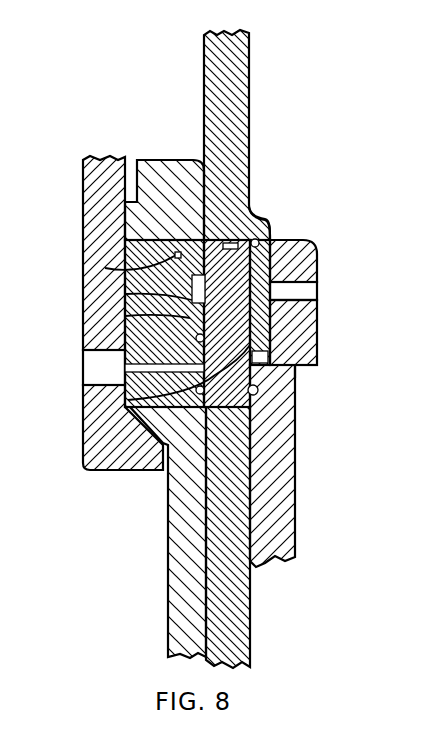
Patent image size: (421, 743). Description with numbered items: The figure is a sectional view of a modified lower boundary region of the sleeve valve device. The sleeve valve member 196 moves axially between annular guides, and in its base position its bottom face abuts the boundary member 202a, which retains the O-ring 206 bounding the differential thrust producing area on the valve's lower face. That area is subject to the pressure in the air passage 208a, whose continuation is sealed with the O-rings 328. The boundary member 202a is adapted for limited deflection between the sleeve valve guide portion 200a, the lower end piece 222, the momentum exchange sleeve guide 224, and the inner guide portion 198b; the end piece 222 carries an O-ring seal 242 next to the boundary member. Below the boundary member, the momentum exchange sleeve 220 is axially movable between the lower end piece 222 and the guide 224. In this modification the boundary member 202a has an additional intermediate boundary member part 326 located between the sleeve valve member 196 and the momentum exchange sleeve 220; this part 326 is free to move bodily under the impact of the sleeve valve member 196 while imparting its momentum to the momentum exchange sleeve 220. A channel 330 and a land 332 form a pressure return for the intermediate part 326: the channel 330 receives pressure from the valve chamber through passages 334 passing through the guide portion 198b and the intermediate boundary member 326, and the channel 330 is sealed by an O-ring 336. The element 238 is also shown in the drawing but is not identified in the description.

The sleeve valve member 196 is at (228, 80).
The sleeve valve guide portion 200a is at (172, 176).
The cover plate 238 is at (100, 189).
The O-ring 206 is at (272, 222).
The air passage 208a is at (313, 252).
The passages 334 is at (303, 290).
The guide portion 198b is at (298, 323).
The intermediate boundary member part 326 is at (297, 353).
The O-ring seal 242 is at (259, 390).
The O-ring 336 is at (105, 268).
The land 332 is at (125, 294).
The channel 330 is at (125, 316).
The boundary member 202a is at (83, 350).
The O-rings 328 is at (103, 400).
The lower end piece 222 is at (270, 475).
The momentum exchange sleeve guide 224 is at (182, 577).
The momentum exchange sleeve 220 is at (234, 600).